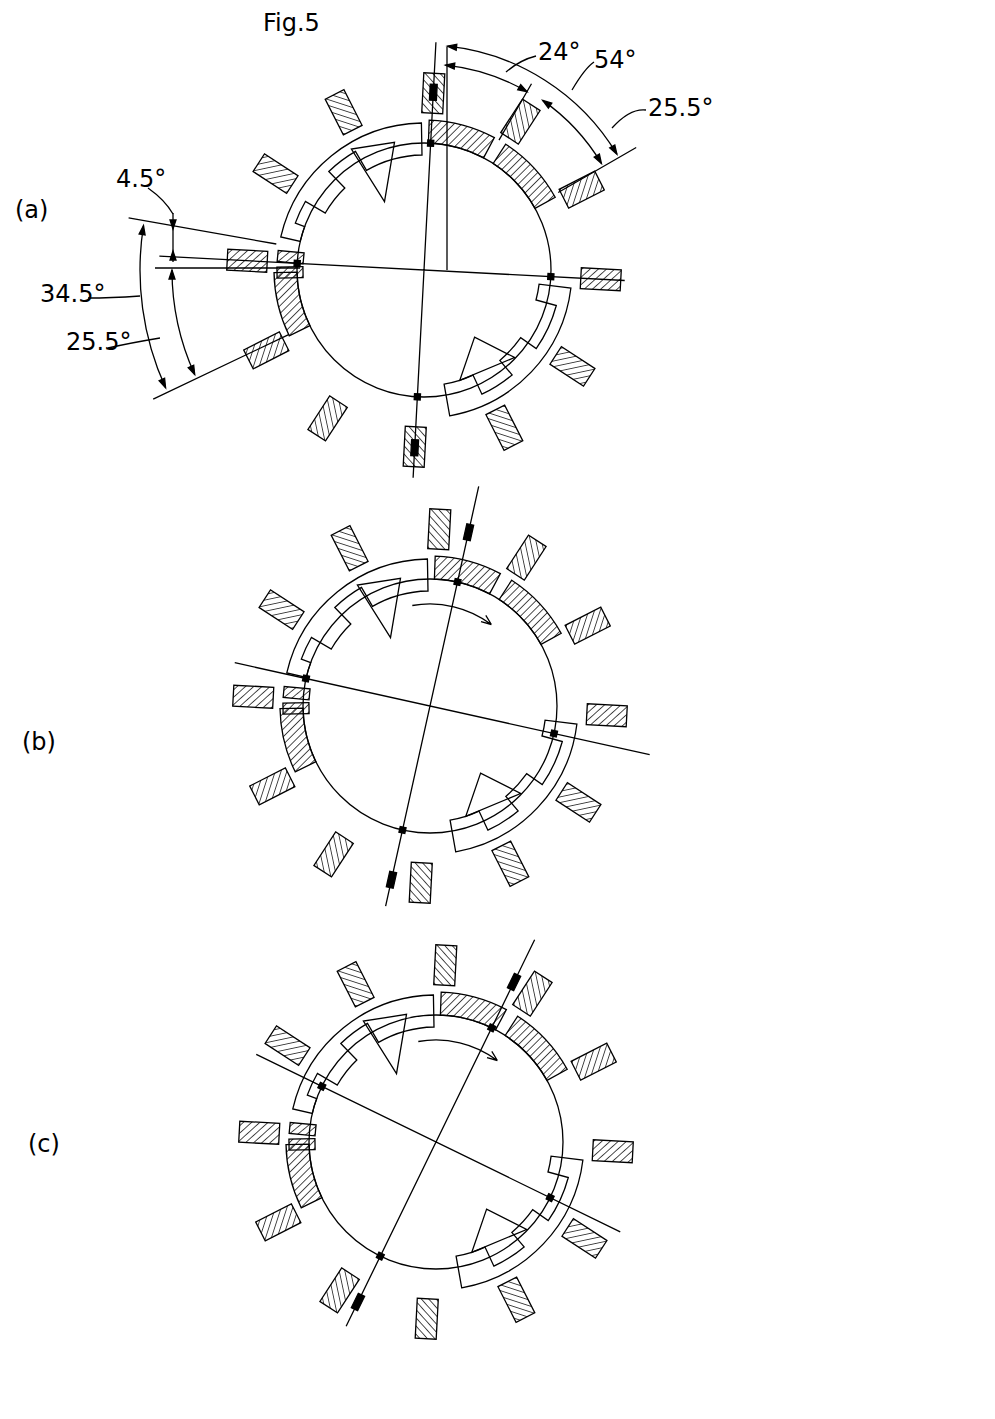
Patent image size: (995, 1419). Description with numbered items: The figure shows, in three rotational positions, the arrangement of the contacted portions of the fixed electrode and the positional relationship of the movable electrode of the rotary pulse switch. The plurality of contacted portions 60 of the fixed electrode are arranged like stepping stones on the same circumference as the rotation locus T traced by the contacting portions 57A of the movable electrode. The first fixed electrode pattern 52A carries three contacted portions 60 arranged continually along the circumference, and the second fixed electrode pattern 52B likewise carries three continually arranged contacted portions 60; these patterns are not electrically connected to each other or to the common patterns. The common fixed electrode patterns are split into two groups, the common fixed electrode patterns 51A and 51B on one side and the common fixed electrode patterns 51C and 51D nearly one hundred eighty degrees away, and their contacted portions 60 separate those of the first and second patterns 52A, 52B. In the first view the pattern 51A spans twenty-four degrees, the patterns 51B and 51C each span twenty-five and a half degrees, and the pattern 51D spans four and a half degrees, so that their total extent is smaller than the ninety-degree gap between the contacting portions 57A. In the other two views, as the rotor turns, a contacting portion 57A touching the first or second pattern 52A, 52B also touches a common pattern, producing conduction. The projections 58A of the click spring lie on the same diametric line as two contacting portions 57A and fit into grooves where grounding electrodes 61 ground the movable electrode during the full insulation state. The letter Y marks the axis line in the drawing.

The common fixed electrode pattern 51A is at (460, 158).
The common fixed electrode pattern 51B is at (512, 200).
The common fixed electrode pattern 51C is at (283, 300).
The common fixed electrode pattern 51D is at (290, 240).
The first fixed electrode pattern 52A is at (337, 160).
The second fixed electrode pattern 52B is at (556, 345).
The contacting portion 57A is at (428, 138).
The projection 58A is at (428, 88).
The contacted portion 60 is at (438, 697).
The grounding electrode 61 is at (330, 412).
The rotation locus T is at (560, 242).
The rotor axis Y is at (427, 275).